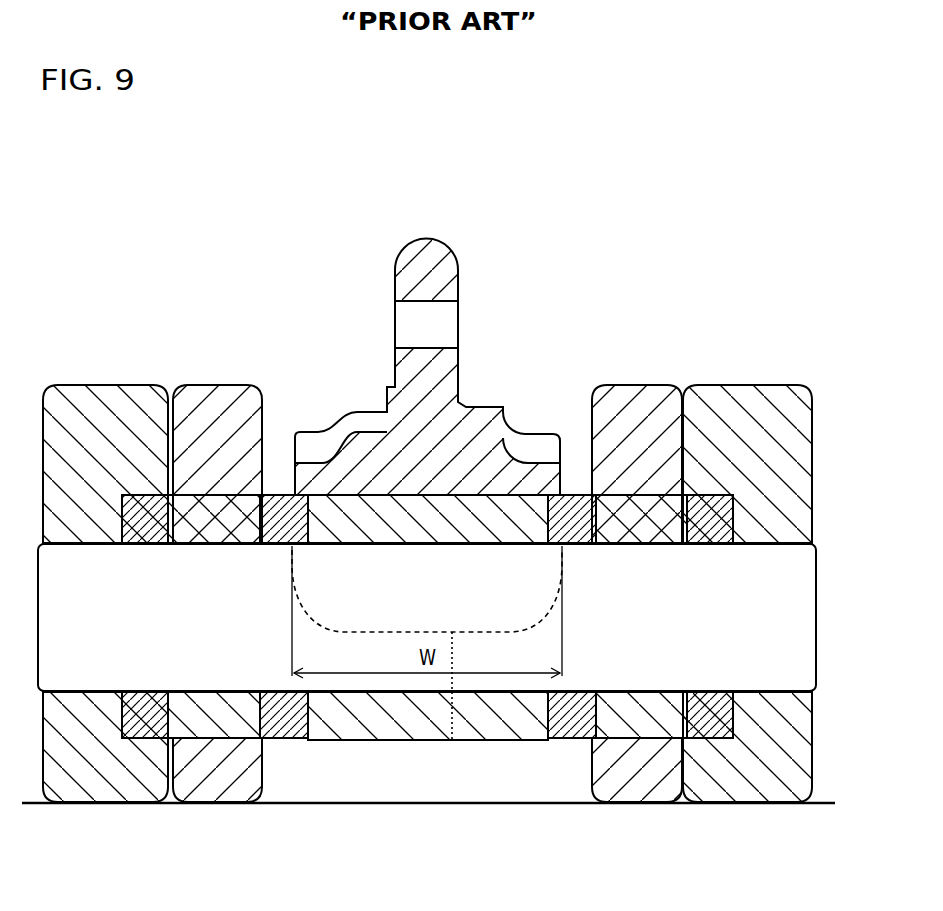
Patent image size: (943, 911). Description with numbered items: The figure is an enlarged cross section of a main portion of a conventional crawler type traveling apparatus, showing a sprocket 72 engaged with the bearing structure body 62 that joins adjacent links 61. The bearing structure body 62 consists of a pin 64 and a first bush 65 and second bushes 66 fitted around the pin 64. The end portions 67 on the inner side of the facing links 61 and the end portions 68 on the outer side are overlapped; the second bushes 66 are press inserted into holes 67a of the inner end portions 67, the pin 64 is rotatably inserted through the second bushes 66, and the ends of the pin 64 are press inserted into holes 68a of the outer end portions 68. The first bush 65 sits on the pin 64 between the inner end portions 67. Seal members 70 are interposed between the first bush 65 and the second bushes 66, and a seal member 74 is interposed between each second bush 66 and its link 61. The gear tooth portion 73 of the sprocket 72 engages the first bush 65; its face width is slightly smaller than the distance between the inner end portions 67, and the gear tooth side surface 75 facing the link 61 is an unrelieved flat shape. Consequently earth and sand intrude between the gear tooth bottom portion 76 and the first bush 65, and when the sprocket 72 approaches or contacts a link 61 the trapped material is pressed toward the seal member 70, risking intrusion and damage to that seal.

The link 61 is at (427, 545).
The bearing structure body 62 is at (350, 744).
The pin 64 is at (397, 697).
The first bush 65 is at (495, 743).
The second bush 66 is at (205, 736).
The end portion 67 is at (245, 410).
The hole 67a is at (216, 503).
The end portion 68 is at (85, 410).
The hole 68a is at (107, 546).
The seal member 70 is at (284, 744).
The sprocket 72 is at (448, 245).
The gear tooth portion 73 is at (443, 708).
The seal member 74 is at (146, 739).
The gear tooth side surface 75 is at (561, 488).
The gear tooth bottom portion 76 is at (427, 520).